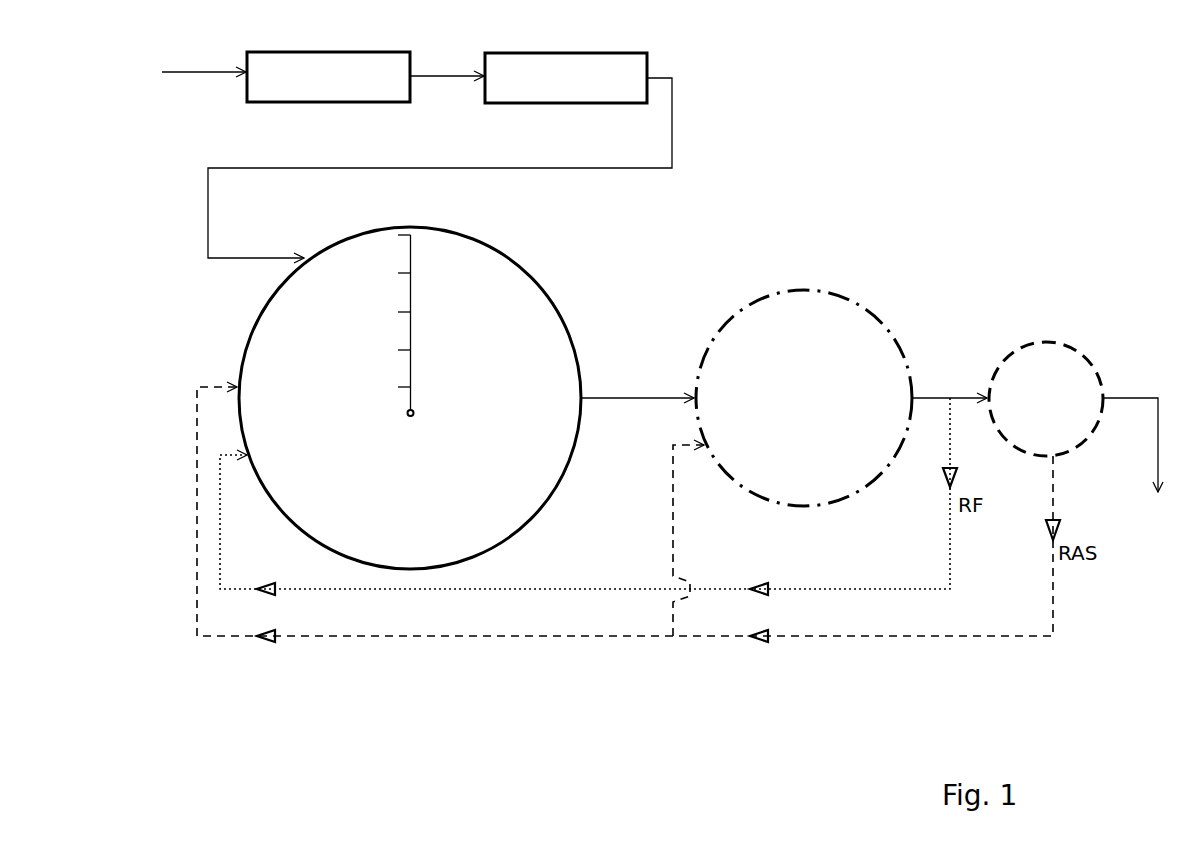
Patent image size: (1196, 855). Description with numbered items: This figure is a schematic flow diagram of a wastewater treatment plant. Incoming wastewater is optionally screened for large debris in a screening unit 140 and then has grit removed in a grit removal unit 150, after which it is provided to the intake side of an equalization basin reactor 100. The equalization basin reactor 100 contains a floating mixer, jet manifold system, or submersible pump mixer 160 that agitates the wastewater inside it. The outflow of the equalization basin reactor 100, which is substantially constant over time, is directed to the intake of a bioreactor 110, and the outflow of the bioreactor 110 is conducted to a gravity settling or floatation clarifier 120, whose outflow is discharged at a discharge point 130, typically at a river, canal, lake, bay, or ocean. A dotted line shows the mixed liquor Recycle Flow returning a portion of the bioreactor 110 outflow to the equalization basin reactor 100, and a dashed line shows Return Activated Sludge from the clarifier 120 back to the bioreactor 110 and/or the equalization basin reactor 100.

The equalization basin reactor 100 is at (410, 398).
The bioreactor 110 is at (804, 398).
The clarifier 120 is at (1046, 399).
The discharge point 130 is at (1144, 463).
The screening unit 140 is at (328, 77).
The grit removal unit 150 is at (566, 78).
The submersible pump mixer 160 is at (417, 282).